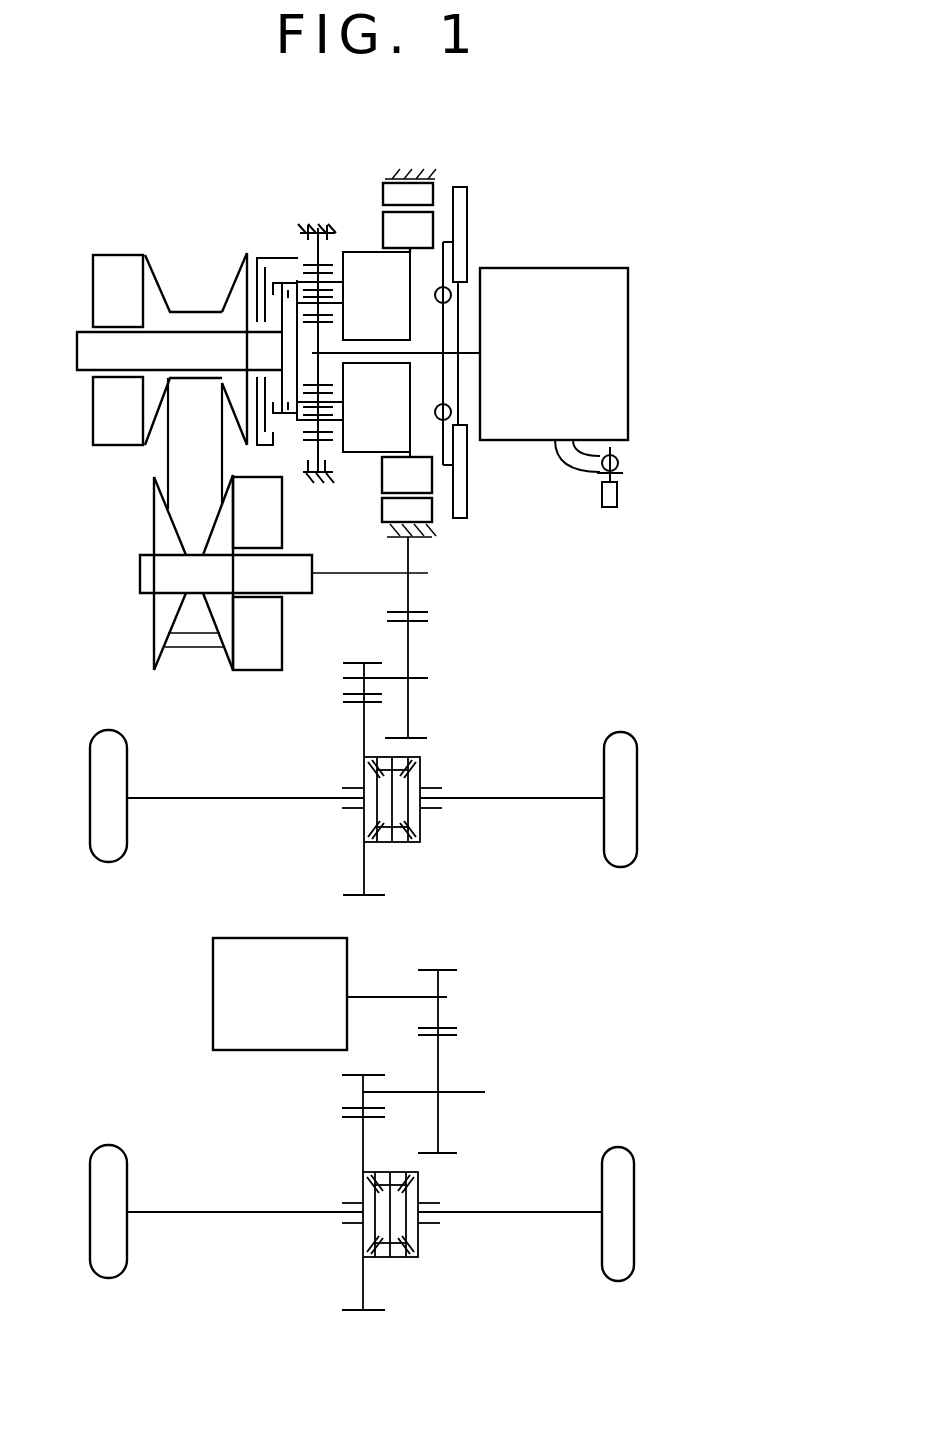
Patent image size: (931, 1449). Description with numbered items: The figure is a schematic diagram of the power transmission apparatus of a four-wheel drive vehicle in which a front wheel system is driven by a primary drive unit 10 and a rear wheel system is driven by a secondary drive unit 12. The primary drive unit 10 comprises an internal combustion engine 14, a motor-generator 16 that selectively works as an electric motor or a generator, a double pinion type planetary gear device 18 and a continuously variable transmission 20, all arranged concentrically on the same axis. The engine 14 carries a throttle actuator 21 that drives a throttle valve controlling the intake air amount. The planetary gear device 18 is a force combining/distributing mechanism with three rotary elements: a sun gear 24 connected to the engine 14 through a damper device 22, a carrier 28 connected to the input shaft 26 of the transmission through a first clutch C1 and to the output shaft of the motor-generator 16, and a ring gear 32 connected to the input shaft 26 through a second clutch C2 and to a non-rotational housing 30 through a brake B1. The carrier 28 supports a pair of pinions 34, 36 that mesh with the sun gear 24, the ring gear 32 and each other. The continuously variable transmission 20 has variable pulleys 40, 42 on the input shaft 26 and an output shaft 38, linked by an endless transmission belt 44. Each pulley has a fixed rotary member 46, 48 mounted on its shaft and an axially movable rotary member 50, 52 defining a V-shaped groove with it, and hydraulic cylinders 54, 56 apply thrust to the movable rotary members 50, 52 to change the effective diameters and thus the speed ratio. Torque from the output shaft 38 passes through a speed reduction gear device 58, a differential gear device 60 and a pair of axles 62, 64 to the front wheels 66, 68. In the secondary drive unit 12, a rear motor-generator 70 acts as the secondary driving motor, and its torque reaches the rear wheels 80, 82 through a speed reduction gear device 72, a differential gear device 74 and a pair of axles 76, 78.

The primary drive unit 10 is at (551, 225).
The secondary drive unit 12 is at (494, 992).
The internal combustion engine 14 is at (588, 278).
The motor-generator 16 is at (437, 173).
The double pinion type planetary gear device 18 is at (354, 240).
The continuously variable transmission 20 is at (102, 628).
The throttle actuator 21 is at (603, 490).
The damper device 22 is at (435, 411).
The sun gear 24 is at (330, 385).
The input shaft 26 is at (85, 348).
The carrier 28 is at (328, 437).
The housing 30 is at (317, 224).
The ring gear 32 is at (328, 263).
The pinion 34 is at (328, 312).
The pinion 36 is at (328, 288).
The output shaft 38 is at (148, 570).
The variable pulley 40 is at (227, 250).
The variable pulley 42 is at (208, 660).
The transmission belt 44 is at (168, 455).
The fixed rotary member 46 is at (237, 310).
The fixed rotary member 48 is at (162, 613).
The movable rotary member 50 is at (150, 290).
The movable rotary member 52 is at (220, 613).
The hydraulic cylinder 54 is at (100, 268).
The hydraulic cylinder 56 is at (268, 653).
The speed reduction gear device 58 is at (427, 663).
The differential gear device 60 is at (432, 770).
The axle 62 is at (237, 797).
The axle 64 is at (505, 797).
The front wheel 66 is at (95, 797).
The front wheel 68 is at (629, 786).
The rear motor-generator 70 is at (216, 980).
The speed reduction gear device 72 is at (465, 1065).
The differential gear device 74 is at (444, 1187).
The axle 76 is at (185, 1211).
The axle 78 is at (498, 1211).
The rear wheel 80 is at (97, 1183).
The rear wheel 82 is at (626, 1185).
The first clutch C1 is at (297, 292).
The second clutch C2 is at (288, 282).
The brake B1 is at (328, 240).